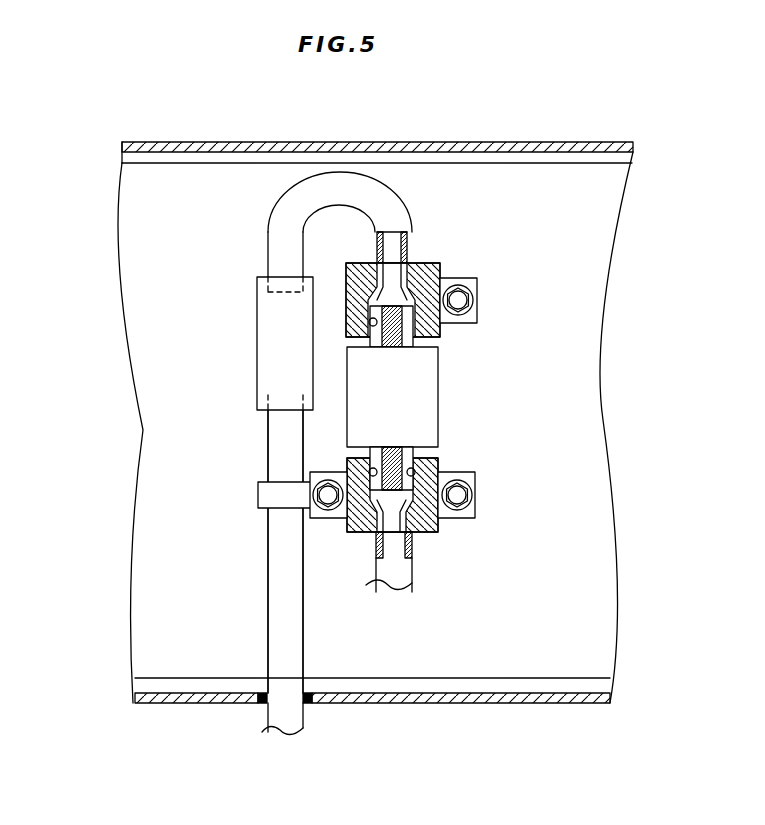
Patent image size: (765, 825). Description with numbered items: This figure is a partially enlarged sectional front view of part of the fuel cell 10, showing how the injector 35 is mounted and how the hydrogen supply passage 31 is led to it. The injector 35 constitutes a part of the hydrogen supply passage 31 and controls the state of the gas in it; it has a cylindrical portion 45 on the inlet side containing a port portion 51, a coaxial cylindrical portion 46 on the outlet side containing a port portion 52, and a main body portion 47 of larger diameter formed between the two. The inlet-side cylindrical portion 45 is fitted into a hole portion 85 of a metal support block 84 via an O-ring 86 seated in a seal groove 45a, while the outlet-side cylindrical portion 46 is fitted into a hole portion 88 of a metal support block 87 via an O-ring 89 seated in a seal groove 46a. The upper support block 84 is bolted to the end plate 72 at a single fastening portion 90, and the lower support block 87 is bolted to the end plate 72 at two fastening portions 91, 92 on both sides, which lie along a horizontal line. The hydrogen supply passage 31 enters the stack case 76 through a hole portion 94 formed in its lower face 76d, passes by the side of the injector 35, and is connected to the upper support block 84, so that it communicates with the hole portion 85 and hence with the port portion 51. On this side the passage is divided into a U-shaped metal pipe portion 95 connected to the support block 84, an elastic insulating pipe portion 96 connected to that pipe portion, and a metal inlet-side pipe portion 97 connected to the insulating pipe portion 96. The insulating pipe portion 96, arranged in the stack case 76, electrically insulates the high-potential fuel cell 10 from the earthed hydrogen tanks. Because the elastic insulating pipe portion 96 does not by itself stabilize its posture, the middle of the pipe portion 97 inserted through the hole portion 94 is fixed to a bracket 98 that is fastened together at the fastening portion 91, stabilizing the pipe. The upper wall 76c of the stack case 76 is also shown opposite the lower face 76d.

The fuel cell 10 is at (108, 222).
The hydrogen supply passage 31 is at (262, 715).
The injector 35 is at (448, 420).
The cylindrical portion 45 is at (440, 281).
The seal groove 45a is at (368, 322).
The cylindrical portion 46 is at (428, 522).
The seal groove 46a is at (368, 472).
The main body portion 47 is at (440, 392).
The port portion 51 is at (422, 266).
The port portion 52 is at (347, 533).
The end plate 72 is at (593, 527).
The stack case 76 is at (162, 708).
The upper wall 76c is at (252, 142).
The lower face 76d is at (522, 705).
The support block 84 is at (358, 257).
The hole portion 85 is at (383, 282).
The O-ring 86 is at (415, 328).
The support block 87 is at (356, 538).
The hole portion 88 is at (442, 532).
The O-ring 89 is at (414, 470).
The fastening portion 90 is at (478, 302).
The fastening portion 91 is at (327, 522).
The fastening portion 92 is at (478, 497).
The hole portion 94 is at (308, 703).
The pipe portion 95 is at (385, 200).
The insulating pipe portion 96 is at (258, 346).
The pipe portion 97 is at (267, 608).
The bracket 98 is at (258, 497).